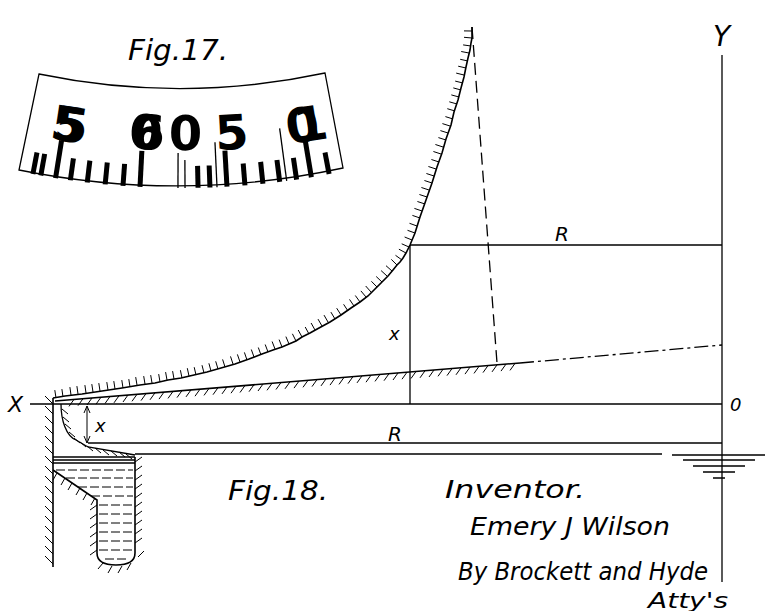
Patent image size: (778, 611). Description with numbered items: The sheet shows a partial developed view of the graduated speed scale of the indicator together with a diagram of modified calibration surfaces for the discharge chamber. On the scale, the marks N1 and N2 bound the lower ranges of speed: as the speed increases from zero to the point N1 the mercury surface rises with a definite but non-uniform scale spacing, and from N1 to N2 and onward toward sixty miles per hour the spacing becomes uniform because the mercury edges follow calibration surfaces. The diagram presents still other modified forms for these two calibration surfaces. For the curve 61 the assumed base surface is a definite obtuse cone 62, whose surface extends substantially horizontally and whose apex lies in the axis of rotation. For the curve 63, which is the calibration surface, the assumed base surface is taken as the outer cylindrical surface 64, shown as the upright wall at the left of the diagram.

In FIG. 17, the scale point N1 is at (217, 188).
In FIG. 17, the scale point N2 is at (291, 186).
In FIG. 18, the curve 61 is at (309, 332).
In FIG. 18, the obtuse cone 62 is at (337, 379).
In FIG. 18, the calibration surface curve 63 is at (80, 438).
In FIG. 18, the outer cylindrical surface 64 is at (53, 427).